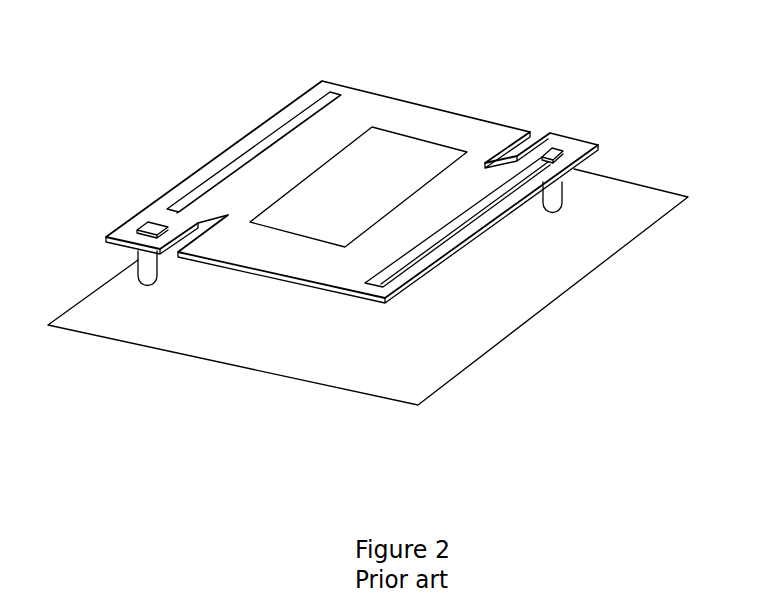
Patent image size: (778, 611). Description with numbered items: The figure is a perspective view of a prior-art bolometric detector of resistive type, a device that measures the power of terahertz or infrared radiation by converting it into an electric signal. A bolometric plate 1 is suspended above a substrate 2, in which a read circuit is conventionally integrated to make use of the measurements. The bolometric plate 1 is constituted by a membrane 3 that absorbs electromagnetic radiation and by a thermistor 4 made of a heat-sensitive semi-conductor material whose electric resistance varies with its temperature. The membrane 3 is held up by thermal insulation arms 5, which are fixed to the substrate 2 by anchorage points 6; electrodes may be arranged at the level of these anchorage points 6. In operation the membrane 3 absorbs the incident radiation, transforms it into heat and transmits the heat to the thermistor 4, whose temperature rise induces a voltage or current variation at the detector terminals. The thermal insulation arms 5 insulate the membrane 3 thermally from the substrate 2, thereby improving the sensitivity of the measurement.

The bolometric plate 1 is at (384, 158).
The substrate 2 is at (525, 275).
The membrane 3 is at (435, 122).
The thermistor 4 is at (375, 167).
The thermal insulation arms 5 is at (243, 140).
The anchorage points 6 is at (598, 145).